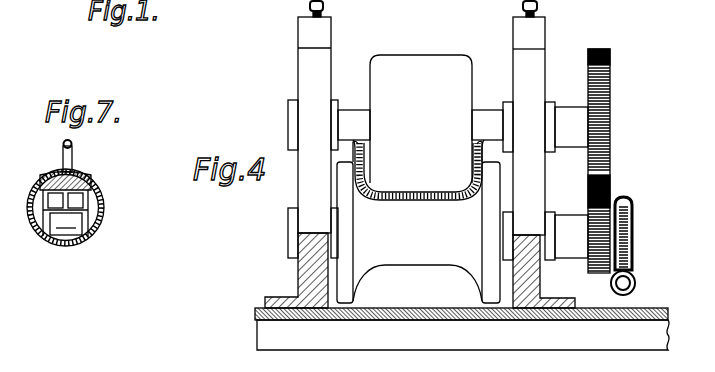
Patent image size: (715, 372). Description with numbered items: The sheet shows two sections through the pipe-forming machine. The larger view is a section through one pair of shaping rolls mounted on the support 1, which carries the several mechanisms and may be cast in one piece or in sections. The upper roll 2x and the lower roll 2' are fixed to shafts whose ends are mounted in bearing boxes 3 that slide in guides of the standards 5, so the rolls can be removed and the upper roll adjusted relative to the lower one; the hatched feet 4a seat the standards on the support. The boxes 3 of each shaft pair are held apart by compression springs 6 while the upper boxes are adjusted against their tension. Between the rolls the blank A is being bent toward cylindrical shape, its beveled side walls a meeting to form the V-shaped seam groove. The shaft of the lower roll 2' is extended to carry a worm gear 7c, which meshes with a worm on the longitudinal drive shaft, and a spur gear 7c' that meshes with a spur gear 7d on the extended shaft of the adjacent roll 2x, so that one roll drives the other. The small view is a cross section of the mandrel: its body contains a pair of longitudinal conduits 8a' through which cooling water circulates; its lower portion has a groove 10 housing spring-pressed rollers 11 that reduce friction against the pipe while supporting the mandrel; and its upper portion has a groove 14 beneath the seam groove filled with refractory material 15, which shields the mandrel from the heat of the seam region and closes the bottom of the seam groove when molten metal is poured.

In FIG. 4, the support 1 is at (256, 313).
In FIG. 4, the upper roll 2x is at (447, 67).
In FIG. 4, the lower roll 2' is at (418, 232).
In FIG. 4, the bearing box 3 is at (549, 220).
In FIG. 4, the standard foot 4a is at (405, 154).
In FIG. 4, the standard 5 is at (315, 180).
In FIG. 4, the compression spring 6 is at (326, 17).
In FIG. 4, the worm gear 7c is at (642, 224).
In FIG. 4, the spur gear 7c' is at (633, 229).
In FIG. 4, the spur gear 7d is at (610, 65).
In FIG. 4, the beveled side wall a is at (366, 143).
In FIG. 4, the blank A is at (462, 201).
In FIG. 7, the conduit 8a' is at (92, 198).
In FIG. 7, the groove 10 is at (101, 222).
In FIG. 7, the roller 11 is at (60, 239).
In FIG. 7, the groove 14 is at (90, 179).
In FIG. 7, the refractory material 15 is at (36, 186).